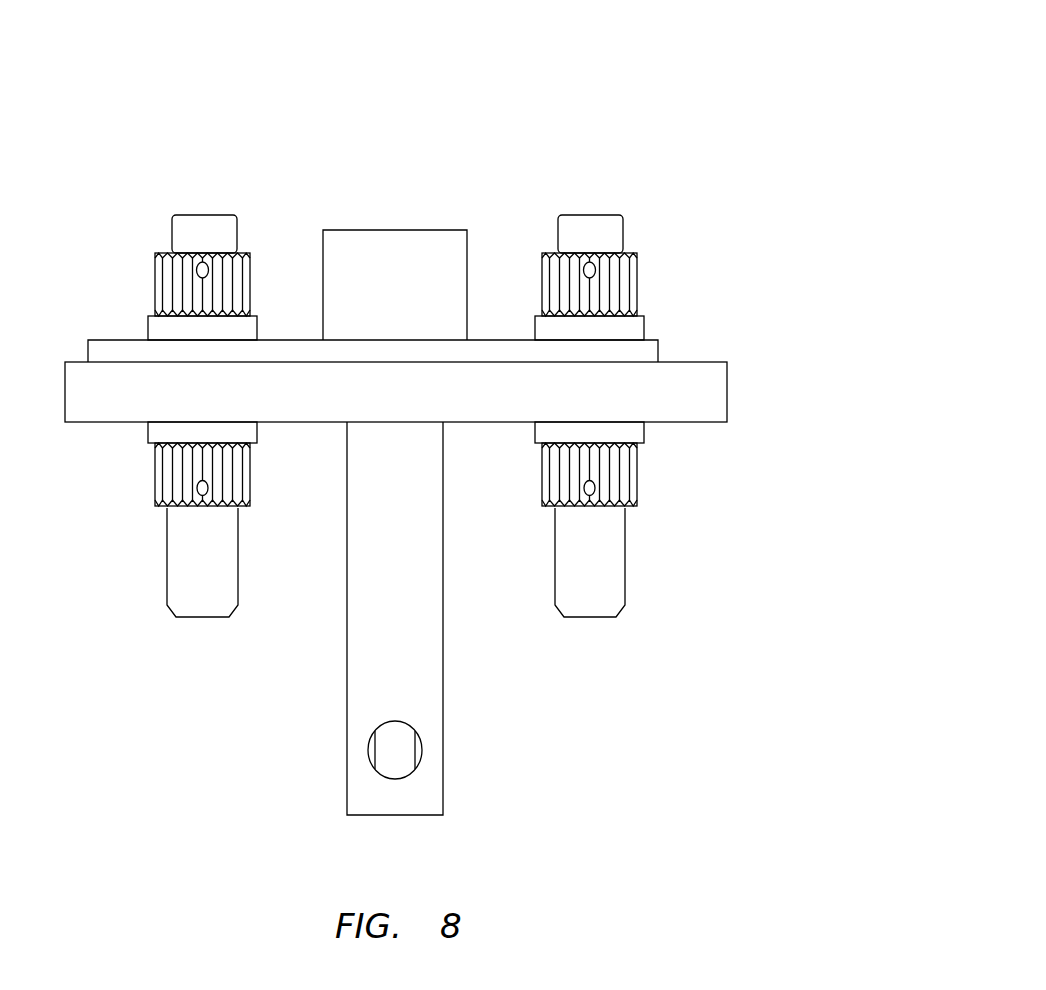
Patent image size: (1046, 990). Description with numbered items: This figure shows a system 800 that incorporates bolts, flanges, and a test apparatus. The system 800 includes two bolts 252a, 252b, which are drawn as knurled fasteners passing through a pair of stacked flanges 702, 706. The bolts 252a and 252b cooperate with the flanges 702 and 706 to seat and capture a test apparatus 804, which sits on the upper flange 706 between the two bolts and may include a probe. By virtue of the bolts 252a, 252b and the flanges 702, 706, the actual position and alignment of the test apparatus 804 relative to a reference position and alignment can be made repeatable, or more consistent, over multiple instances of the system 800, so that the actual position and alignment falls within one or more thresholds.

The system 800 is at (597, 83).
The test apparatus 804 is at (385, 240).
The flange 706 is at (108, 348).
The flange 702 is at (94, 397).
The bolt 252a is at (193, 460).
The bolt 252b is at (598, 461).